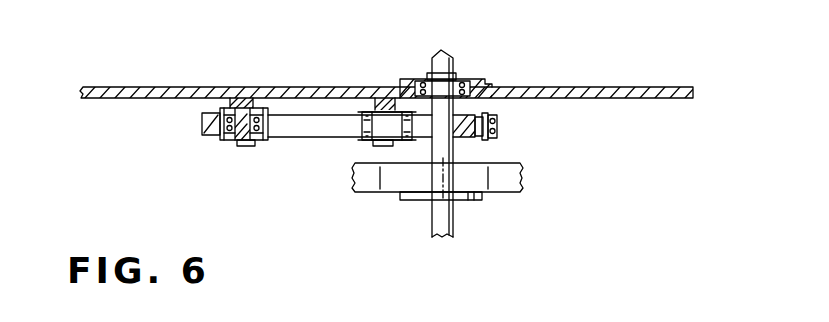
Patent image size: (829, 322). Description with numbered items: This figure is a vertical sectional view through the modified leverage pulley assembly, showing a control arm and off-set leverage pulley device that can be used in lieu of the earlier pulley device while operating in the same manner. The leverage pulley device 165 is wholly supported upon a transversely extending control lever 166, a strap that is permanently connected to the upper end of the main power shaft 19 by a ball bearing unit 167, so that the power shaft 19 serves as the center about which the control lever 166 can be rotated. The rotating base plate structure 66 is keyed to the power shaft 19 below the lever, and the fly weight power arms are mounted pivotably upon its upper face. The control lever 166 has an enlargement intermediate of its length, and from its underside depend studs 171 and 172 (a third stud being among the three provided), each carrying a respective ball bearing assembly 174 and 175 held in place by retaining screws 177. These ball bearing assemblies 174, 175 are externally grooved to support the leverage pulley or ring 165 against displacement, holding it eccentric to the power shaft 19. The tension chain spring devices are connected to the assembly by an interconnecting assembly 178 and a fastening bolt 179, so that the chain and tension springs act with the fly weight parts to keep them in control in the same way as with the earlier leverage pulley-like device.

The control lever 166 is at (108, 87).
The ball bearing unit 167 is at (458, 84).
The main power shaft 19 is at (436, 223).
The leverage pulley 165 is at (327, 138).
The stud 171 is at (239, 116).
The stud 172 is at (383, 108).
The ball bearing assembly 175 is at (368, 120).
The retaining screw 177 is at (251, 143).
The ball bearing assembly 174 is at (217, 137).
The fastening bolt 179 is at (490, 116).
The interconnecting assembly 178 is at (497, 128).
The rotating base plate structure 66 is at (504, 193).